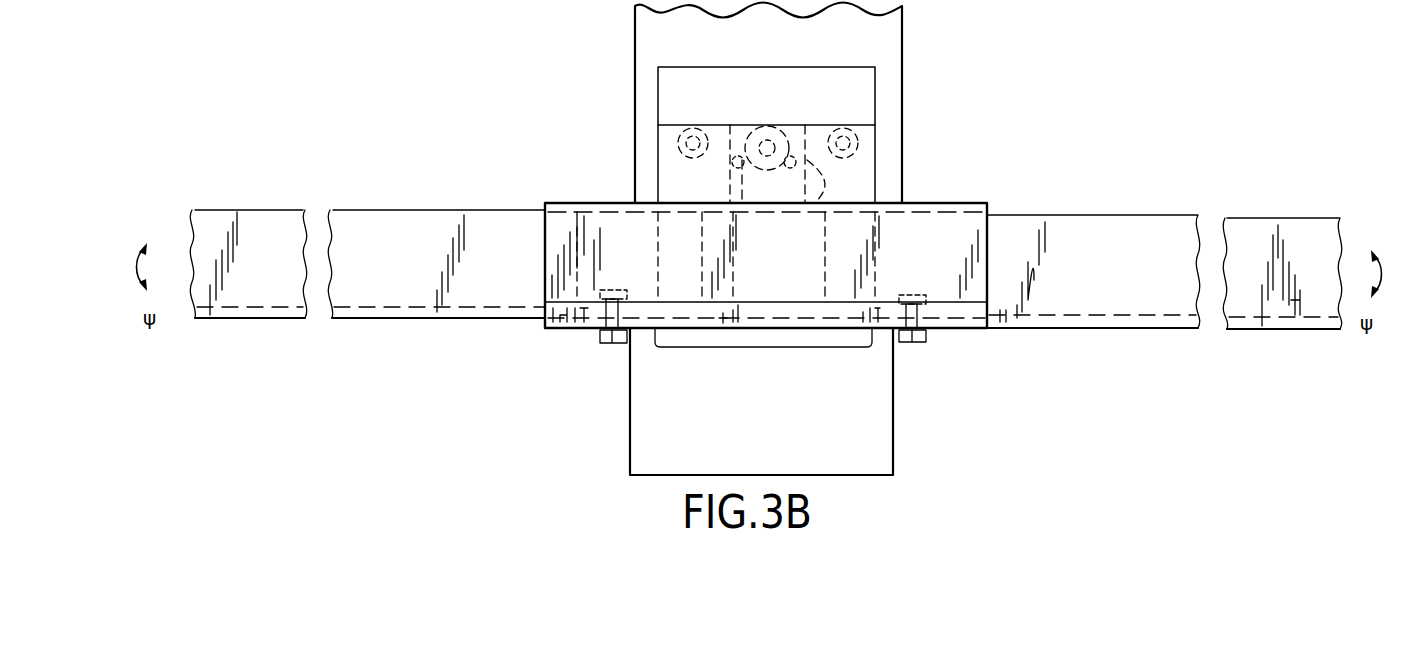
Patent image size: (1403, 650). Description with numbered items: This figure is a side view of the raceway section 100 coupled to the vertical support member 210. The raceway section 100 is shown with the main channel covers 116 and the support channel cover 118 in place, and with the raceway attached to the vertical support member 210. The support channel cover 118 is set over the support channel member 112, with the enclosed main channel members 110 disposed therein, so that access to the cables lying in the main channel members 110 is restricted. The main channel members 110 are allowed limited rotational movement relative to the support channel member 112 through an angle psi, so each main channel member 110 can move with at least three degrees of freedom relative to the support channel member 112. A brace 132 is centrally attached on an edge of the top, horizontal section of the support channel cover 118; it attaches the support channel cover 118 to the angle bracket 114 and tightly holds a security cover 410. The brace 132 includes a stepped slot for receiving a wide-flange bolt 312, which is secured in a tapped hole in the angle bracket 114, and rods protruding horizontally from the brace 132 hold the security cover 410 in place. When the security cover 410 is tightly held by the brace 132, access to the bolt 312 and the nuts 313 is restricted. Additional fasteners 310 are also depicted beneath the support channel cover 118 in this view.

The raceway section 100 is at (1158, 123).
The vertical support member 210 is at (902, 69).
The angle bracket 114 is at (657, 137).
The security cover 410 is at (672, 173).
The nuts 313 is at (698, 128).
The wide-flange bolt 312 is at (762, 167).
The brace 132 is at (812, 210).
The support channel cover 118 is at (922, 202).
The support channel member 112 is at (557, 333).
The bolts 310 is at (612, 337).
The main channel covers 116 is at (407, 208).
The main channel members 110 is at (425, 318).